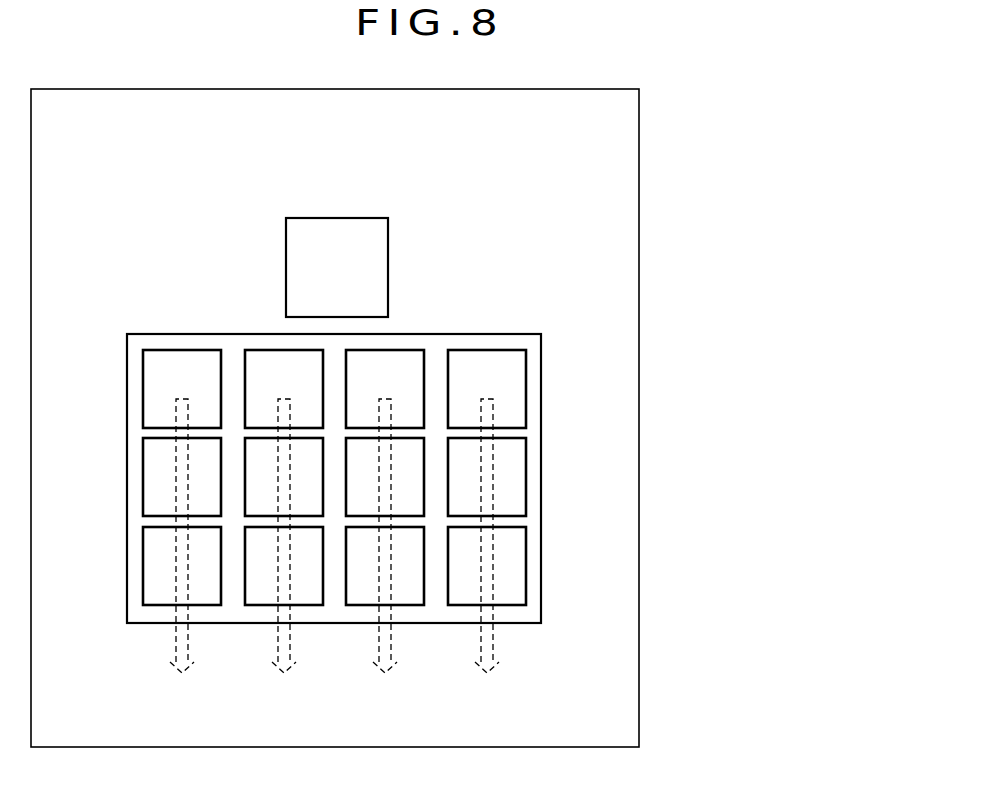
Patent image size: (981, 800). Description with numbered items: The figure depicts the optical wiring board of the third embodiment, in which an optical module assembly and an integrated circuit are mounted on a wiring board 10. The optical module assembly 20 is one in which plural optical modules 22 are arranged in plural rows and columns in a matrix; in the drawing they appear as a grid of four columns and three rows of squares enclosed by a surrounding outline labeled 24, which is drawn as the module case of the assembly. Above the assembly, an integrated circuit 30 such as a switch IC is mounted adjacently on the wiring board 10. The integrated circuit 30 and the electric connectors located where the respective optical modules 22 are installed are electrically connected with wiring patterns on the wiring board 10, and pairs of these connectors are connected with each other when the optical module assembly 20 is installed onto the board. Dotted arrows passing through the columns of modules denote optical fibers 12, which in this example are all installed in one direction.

The wiring board 10 is at (620, 524).
The optical fibers 12 is at (500, 643).
The optical module assembly 20 is at (463, 528).
The optical modules 22 is at (513, 479).
The module case 24 is at (152, 613).
The integrated circuit 30 is at (360, 262).